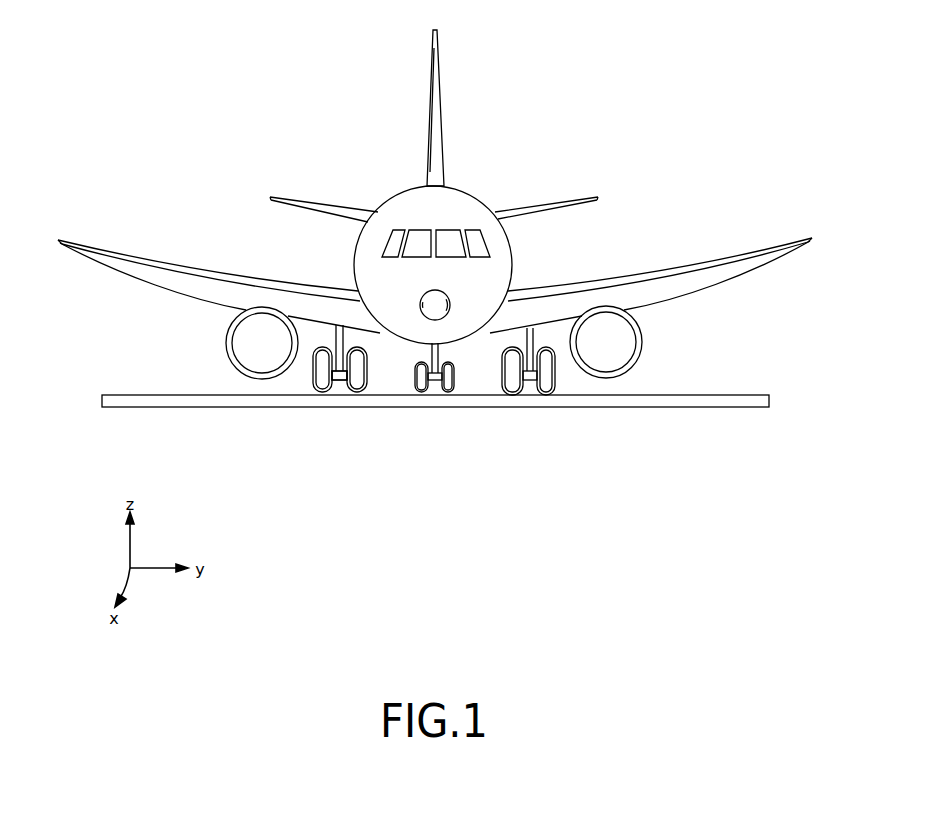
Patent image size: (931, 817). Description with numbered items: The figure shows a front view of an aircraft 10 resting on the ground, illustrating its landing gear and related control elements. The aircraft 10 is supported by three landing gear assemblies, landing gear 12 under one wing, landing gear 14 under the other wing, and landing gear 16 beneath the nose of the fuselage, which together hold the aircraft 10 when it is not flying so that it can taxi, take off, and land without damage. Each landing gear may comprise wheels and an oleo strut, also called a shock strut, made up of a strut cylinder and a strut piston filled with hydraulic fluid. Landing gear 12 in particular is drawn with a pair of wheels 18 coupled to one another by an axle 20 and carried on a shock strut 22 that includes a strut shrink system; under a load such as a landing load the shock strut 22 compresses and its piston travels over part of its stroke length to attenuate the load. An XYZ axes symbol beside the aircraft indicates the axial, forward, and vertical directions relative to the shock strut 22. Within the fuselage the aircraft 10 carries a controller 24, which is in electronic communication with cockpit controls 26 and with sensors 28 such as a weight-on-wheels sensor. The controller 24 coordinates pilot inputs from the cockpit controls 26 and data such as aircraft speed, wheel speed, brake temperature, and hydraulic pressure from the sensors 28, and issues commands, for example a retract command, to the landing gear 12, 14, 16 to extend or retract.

The aircraft 10 is at (305, 115).
The landing gear 12 is at (558, 324).
The landing gear 14 is at (322, 330).
The landing gear 16 is at (405, 388).
The wheels 18 is at (513, 380).
The axle 20 is at (530, 374).
The shock strut 22 is at (513, 350).
The controller 24 is at (405, 305).
The cockpit controls 26 is at (395, 242).
The sensors 28 is at (335, 362).